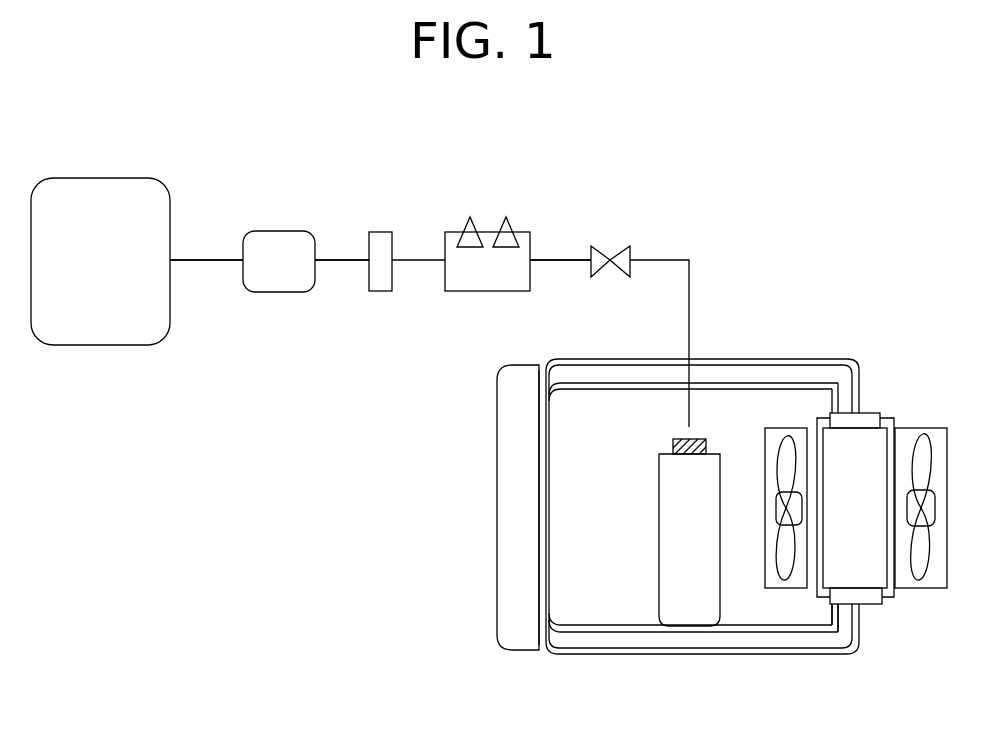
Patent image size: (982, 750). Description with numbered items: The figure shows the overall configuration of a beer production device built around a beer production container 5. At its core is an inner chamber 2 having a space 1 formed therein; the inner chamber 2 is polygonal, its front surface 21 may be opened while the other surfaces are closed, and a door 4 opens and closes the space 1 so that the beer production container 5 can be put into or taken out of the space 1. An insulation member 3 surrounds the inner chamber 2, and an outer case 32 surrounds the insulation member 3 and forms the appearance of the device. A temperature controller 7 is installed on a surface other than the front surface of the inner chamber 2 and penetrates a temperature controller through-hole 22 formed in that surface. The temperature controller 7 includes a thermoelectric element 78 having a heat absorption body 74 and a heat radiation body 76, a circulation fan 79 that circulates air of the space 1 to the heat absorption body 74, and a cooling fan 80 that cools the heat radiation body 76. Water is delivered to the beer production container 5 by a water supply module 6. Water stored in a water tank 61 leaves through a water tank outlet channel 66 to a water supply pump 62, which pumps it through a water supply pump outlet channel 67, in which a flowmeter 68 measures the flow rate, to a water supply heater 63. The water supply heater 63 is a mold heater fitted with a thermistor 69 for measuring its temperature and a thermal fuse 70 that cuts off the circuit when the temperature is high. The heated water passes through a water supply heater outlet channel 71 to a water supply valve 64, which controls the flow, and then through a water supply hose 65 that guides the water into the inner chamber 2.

The space 1 is at (610, 613).
The inner chamber 2 is at (738, 630).
The insulation member 3 is at (573, 642).
The door 4 is at (512, 587).
The beer production container 5 is at (690, 614).
The water supply module 6 is at (312, 172).
The temperature controller 7 is at (929, 607).
The front surface 21 is at (542, 500).
The temperature controller through-hole 22 is at (833, 605).
The outer case 32 is at (792, 652).
The water tank 61 is at (100, 185).
The water supply pump 62 is at (281, 280).
The water supply heater 63 is at (462, 292).
The water supply valve 64 is at (605, 248).
The water supply hose 65 is at (690, 405).
The water tank outlet channel 66 is at (205, 258).
The water supply pump outlet channel 67 is at (340, 262).
The flowmeter 68 is at (382, 232).
The thermistor 69 is at (466, 225).
The thermal fuse 70 is at (508, 225).
The water supply heater outlet channel 71 is at (565, 258).
The heat absorption body 74 is at (848, 443).
The heat radiation body 76 is at (903, 443).
The thermoelectric element 78 is at (877, 622).
The circulation fan 79 is at (795, 443).
The cooling fan 80 is at (925, 443).